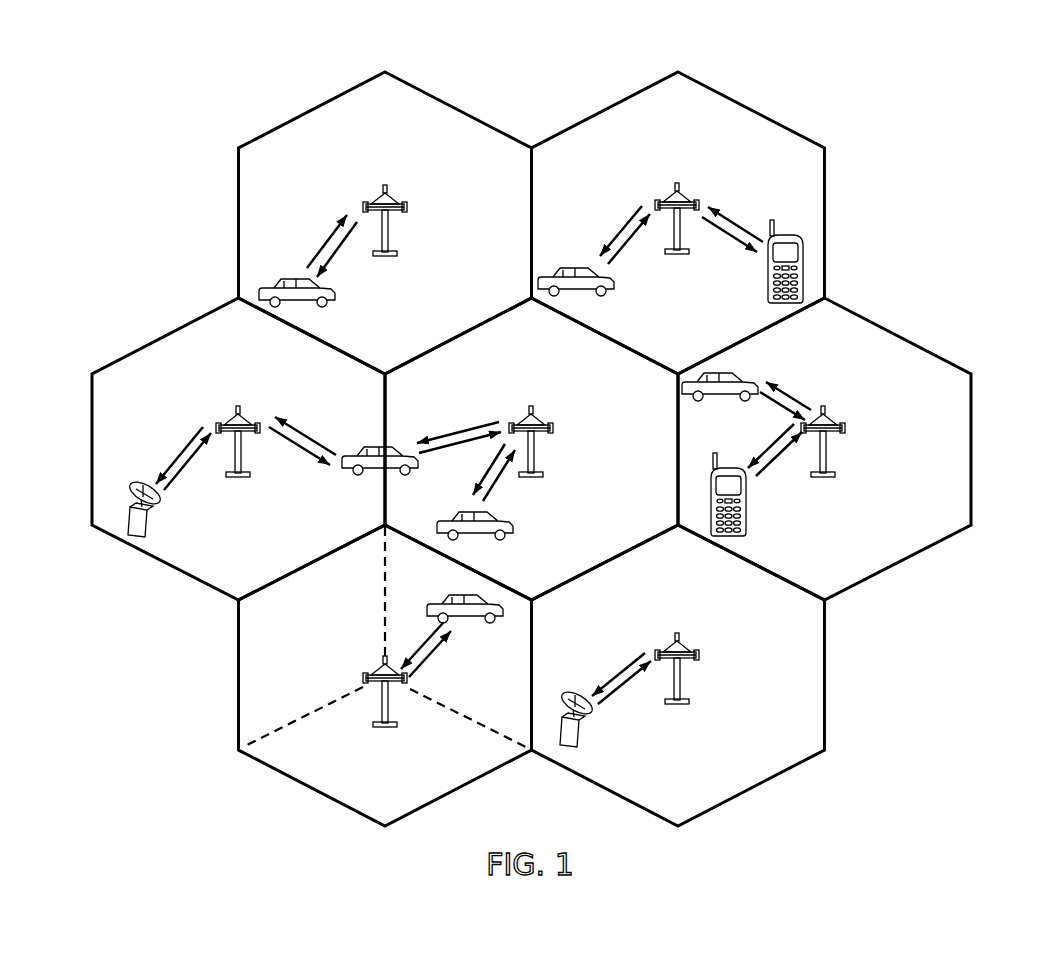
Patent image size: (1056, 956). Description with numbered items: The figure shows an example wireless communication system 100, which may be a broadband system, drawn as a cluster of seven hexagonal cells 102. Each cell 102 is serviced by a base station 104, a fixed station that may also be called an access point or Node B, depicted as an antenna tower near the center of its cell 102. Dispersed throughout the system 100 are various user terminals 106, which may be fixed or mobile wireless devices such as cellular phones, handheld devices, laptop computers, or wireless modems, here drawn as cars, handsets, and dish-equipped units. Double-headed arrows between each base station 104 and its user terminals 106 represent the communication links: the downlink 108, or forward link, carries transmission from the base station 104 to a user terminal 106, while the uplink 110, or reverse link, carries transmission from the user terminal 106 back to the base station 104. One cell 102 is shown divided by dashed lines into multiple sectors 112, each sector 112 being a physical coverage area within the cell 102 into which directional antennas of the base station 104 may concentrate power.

The wireless communication system 100 is at (958, 145).
The cell 102 is at (320, 105).
The base station 104 is at (385, 184).
The user terminal 106 is at (335, 300).
The downlink 108 is at (335, 262).
The uplink 110 is at (330, 234).
The sector 112 is at (437, 784).